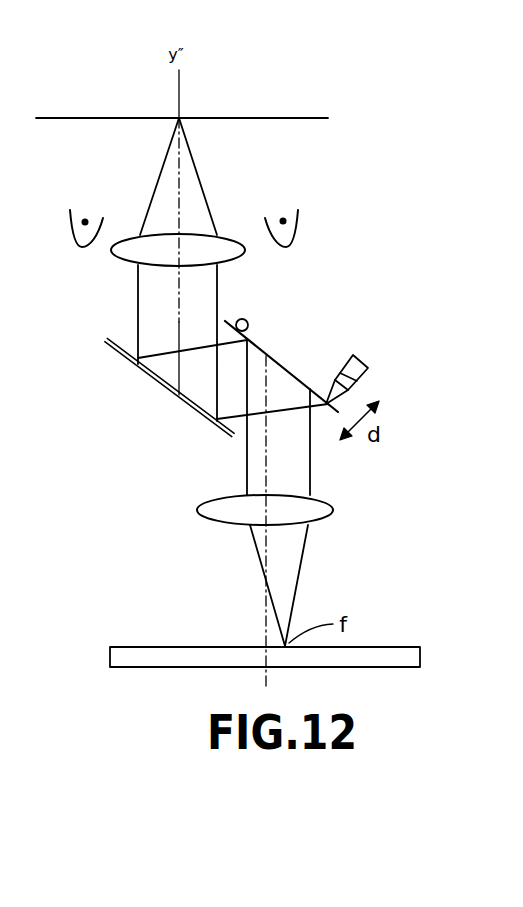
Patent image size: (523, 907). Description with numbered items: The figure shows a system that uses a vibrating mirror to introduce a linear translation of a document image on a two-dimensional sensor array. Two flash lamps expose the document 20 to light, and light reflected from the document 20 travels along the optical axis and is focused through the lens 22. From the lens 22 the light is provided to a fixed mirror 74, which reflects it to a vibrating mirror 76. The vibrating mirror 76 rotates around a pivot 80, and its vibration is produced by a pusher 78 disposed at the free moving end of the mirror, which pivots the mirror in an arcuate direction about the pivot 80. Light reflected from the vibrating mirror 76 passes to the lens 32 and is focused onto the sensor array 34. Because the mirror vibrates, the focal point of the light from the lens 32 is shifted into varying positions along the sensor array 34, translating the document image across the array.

The document 20 is at (275, 118).
The lens 22 is at (222, 238).
The fixed mirror 74 is at (210, 428).
The vibrating mirror 76 is at (277, 360).
The pusher 78 is at (366, 363).
The pivot 80 is at (248, 319).
The lens 32 is at (330, 505).
The sensor array 34 is at (372, 647).